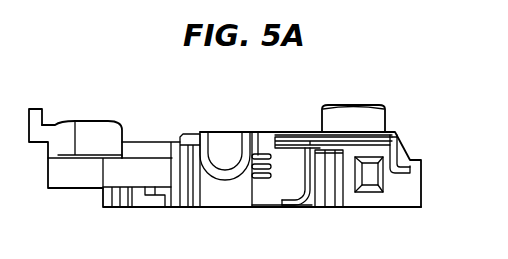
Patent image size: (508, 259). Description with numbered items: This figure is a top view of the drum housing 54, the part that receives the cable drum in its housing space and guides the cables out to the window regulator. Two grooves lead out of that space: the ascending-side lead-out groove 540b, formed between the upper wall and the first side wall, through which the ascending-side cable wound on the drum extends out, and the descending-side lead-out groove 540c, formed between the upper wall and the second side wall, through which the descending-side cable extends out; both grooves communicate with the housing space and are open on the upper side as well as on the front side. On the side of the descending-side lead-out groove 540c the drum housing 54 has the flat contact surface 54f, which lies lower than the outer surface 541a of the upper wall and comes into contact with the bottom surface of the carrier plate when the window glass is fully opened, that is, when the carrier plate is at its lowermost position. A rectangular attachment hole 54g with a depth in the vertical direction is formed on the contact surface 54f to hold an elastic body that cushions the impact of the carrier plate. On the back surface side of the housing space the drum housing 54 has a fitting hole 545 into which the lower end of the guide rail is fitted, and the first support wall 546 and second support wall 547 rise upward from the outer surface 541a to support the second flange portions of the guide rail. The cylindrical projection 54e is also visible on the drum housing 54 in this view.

The drum housing 54 is at (77, 105).
The ascending-side lead-out groove 540b is at (186, 190).
The descending-side lead-out groove 540c is at (330, 190).
The outer surface of the upper wall 541a is at (280, 168).
The fitting hole 545 is at (343, 133).
The first support wall 546 is at (248, 203).
The second support wall 547 is at (258, 140).
The cylindrical protrusion 54e is at (375, 118).
The contact surface 54f is at (407, 193).
The attachment hole 54g is at (368, 178).